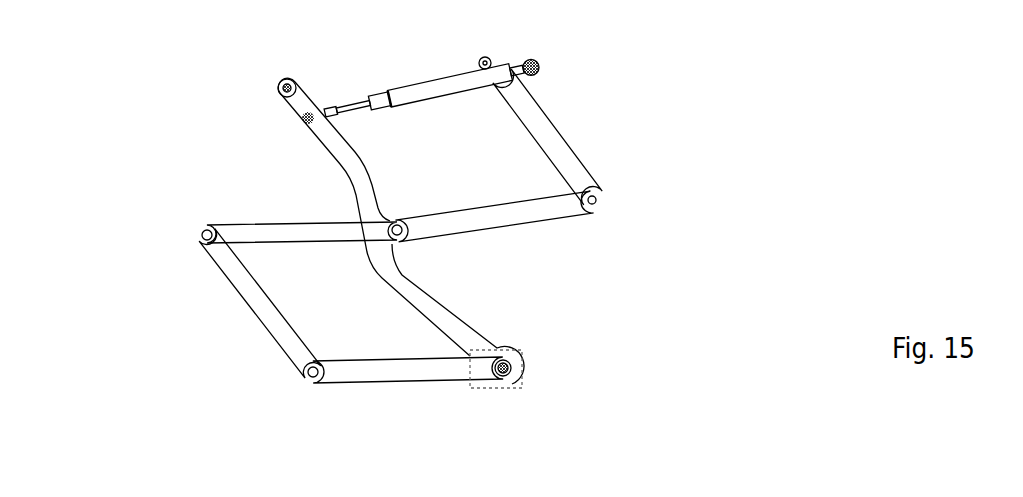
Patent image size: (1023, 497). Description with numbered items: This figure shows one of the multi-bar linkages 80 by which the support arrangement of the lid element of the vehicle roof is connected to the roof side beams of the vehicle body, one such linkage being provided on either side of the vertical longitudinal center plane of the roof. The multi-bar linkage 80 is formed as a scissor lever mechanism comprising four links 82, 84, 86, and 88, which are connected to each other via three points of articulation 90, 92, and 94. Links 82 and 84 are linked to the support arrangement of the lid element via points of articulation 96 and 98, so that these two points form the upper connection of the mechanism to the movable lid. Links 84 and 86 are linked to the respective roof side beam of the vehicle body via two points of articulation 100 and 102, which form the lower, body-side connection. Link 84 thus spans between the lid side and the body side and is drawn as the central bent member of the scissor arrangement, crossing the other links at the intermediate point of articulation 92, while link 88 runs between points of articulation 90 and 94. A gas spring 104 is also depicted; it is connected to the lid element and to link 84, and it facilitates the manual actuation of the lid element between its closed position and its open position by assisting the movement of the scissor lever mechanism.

The multi-bar linkage 80 is at (187, 136).
The link 82 is at (545, 135).
The link 84 is at (358, 175).
The link 86 is at (255, 303).
The link 88 is at (513, 217).
The point of articulation 90 is at (195, 233).
The point of articulation 92 is at (412, 235).
The point of articulation 94 is at (602, 200).
The point of articulation 96 is at (288, 82).
The point of articulation 98 is at (490, 62).
The point of articulation 100 is at (313, 375).
The point of articulation 102 is at (522, 368).
The gas spring 104 is at (412, 88).